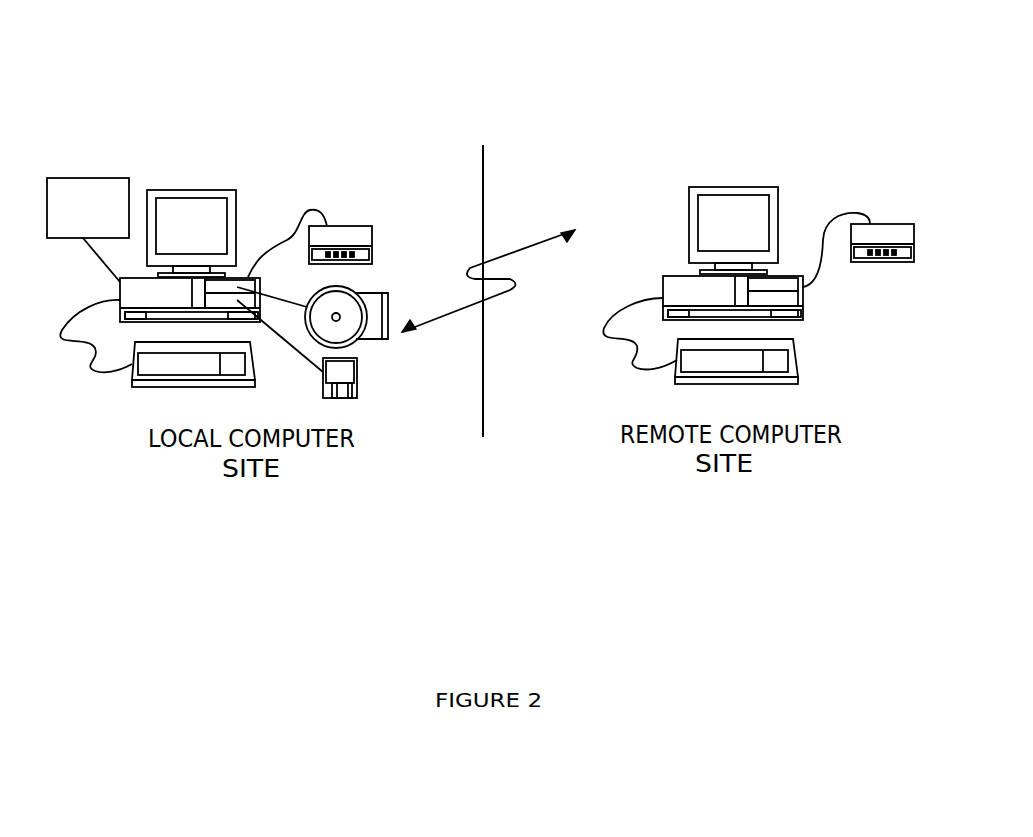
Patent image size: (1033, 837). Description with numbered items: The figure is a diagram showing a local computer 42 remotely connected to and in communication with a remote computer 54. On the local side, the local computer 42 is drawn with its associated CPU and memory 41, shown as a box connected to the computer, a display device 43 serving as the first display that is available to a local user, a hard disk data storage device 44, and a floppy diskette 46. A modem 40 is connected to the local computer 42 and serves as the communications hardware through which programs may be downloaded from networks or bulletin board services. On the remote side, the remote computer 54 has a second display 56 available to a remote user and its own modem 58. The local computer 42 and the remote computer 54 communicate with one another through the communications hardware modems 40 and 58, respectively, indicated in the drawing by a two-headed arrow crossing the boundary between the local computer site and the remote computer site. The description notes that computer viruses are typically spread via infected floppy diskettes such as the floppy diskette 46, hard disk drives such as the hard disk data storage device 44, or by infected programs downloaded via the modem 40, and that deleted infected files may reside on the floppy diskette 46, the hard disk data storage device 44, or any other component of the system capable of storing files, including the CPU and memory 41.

The modem 40 is at (347, 226).
The CPU and memory 41 is at (70, 178).
The local computer 42 is at (218, 106).
The display device 43 is at (188, 190).
The hard disk data storage device 44 is at (368, 293).
The floppy diskette 46 is at (357, 381).
The remote computer 54 is at (738, 86).
The second display 56 is at (718, 187).
The modem 58 is at (903, 224).